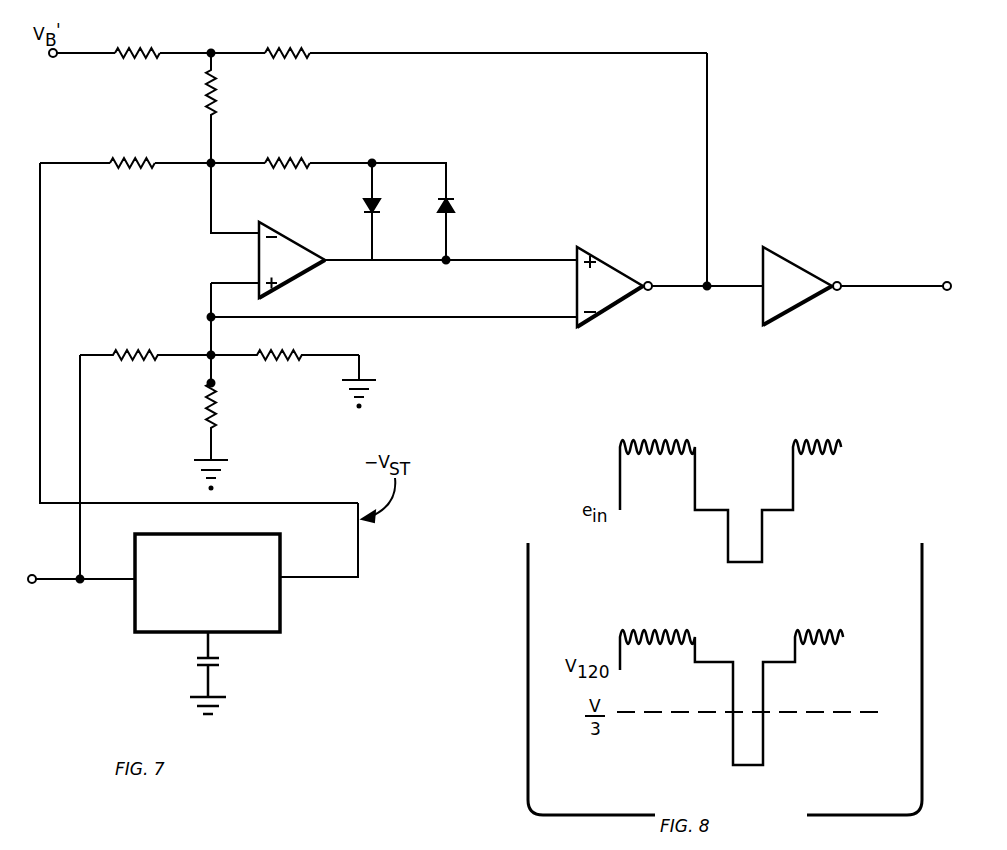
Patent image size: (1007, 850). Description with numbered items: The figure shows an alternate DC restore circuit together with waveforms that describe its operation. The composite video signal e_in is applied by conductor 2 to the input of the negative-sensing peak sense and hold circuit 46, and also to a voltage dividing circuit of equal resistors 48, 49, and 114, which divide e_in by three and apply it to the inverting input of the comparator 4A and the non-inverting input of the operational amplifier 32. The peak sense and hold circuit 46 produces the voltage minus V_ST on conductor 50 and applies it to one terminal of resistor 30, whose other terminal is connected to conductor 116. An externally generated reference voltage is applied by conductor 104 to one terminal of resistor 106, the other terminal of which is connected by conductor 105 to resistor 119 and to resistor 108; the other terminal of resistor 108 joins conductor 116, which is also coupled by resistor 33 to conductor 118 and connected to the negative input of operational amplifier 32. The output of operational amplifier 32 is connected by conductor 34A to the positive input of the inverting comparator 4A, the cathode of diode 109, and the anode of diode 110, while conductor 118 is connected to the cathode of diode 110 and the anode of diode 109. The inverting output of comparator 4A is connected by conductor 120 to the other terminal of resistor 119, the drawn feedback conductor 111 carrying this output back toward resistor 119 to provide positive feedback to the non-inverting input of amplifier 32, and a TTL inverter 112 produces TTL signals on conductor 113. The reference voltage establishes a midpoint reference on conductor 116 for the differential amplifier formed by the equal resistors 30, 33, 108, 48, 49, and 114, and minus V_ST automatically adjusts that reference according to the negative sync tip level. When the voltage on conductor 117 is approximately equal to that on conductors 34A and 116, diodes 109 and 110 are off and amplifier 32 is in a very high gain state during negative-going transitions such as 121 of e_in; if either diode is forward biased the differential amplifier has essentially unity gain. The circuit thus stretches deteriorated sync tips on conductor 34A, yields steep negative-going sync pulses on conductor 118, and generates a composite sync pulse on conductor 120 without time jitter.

In FIG. 7, the conductor 2 is at (32, 584).
In FIG. 7, the conductor 104 is at (83, 54).
In FIG. 7, the conductor 105 is at (208, 51).
In FIG. 7, the resistor 106 is at (143, 60).
In FIG. 7, the resistor 108 is at (218, 107).
In FIG. 7, the resistor 119 is at (285, 60).
In FIG. 7, the feedback conductor 111 is at (709, 190).
In FIG. 7, the conductor 116 is at (209, 161).
In FIG. 7, the resistor 30 is at (145, 166).
In FIG. 7, the resistor 33 is at (300, 166).
In FIG. 7, the conductor 118 is at (432, 163).
In FIG. 7, the diode 109 is at (379, 198).
In FIG. 7, the diode 110 is at (453, 198).
In FIG. 7, the operational amplifier 32 is at (297, 240).
In FIG. 7, the conductor 34A is at (477, 260).
In FIG. 7, the inverting comparator 4A is at (612, 262).
In FIG. 7, the conductor 120 is at (671, 290).
In FIG. 7, the TTL inverter 112 is at (810, 240).
In FIG. 7, the conductor 113 is at (946, 290).
In FIG. 7, the resistor 48 is at (146, 361).
In FIG. 7, the resistor 49 is at (289, 361).
In FIG. 7, the conductor 117 is at (372, 380).
In FIG. 7, the resistor 114 is at (218, 414).
In FIG. 7, the negative-sensing peak sense and hold circuit 46 is at (282, 550).
In FIG. 7, the conductor 50 is at (360, 555).
In FIG. 8, the negative-going transition 121 is at (726, 554).